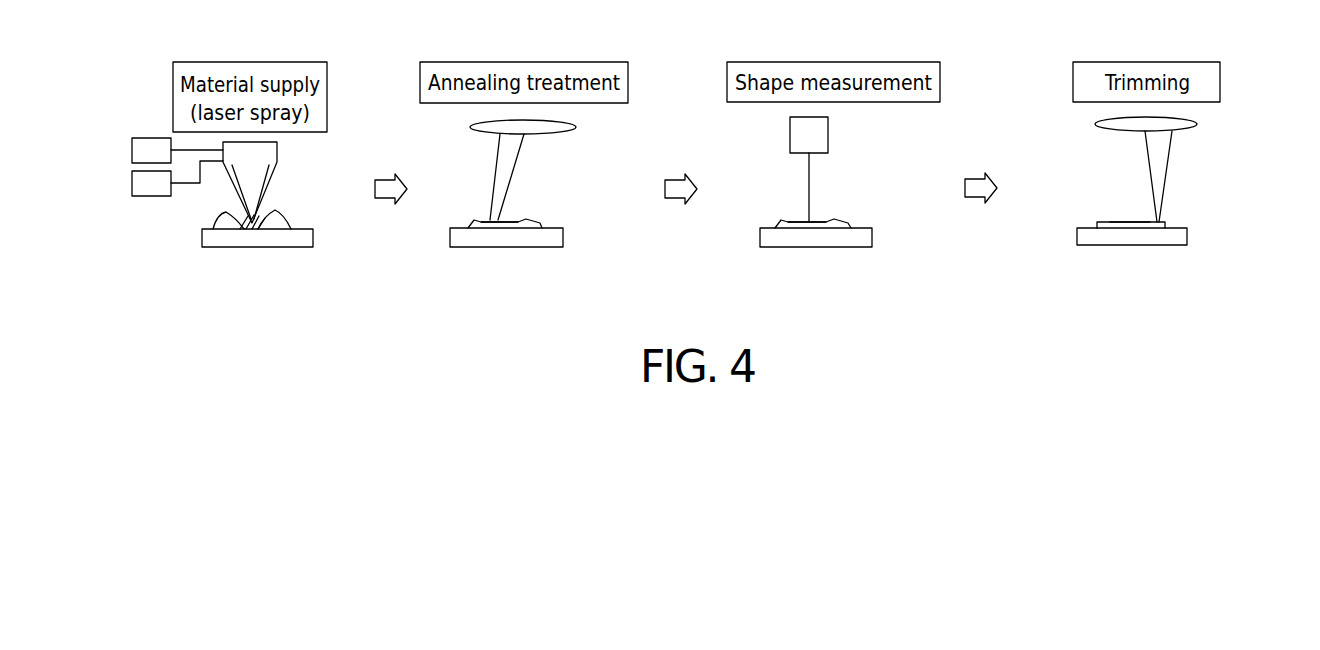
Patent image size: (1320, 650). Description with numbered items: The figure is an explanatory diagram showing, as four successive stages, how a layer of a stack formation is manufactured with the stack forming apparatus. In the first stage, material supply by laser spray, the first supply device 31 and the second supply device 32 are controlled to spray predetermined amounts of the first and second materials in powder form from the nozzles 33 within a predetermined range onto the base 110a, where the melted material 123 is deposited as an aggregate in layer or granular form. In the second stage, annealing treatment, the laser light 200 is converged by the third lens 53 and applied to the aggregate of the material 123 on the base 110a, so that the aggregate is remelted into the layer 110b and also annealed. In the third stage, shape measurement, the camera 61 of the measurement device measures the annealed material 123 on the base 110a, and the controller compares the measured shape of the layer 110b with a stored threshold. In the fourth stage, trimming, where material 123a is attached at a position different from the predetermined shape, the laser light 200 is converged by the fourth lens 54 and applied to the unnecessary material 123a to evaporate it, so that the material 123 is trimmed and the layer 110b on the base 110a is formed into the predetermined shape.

The first supply device 31 is at (132, 150).
The second supply device 32 is at (132, 183).
The nozzles 33 is at (278, 150).
The material 123 is at (222, 214).
The base 110a is at (292, 247).
The third lens 53 is at (576, 127).
The laser light 200 is at (524, 156).
The unnecessary material 123a is at (473, 220).
The layer 110b is at (507, 220).
The camera 61 is at (828, 135).
The fourth lens 54 is at (1197, 124).